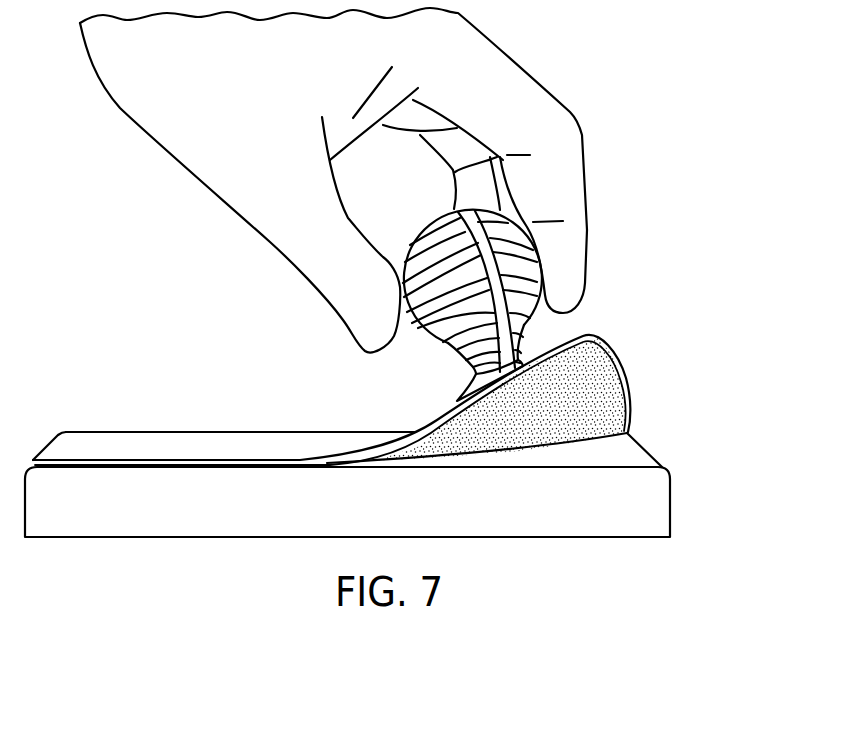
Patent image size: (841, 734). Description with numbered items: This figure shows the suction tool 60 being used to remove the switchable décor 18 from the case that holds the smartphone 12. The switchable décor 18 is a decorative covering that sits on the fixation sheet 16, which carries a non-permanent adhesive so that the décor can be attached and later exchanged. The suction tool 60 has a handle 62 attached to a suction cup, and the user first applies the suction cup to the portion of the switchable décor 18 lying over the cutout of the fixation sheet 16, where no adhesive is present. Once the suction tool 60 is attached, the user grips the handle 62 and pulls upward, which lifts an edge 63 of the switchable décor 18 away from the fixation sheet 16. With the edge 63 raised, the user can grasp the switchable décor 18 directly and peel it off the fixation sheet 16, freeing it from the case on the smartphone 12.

The smartphone 12 is at (689, 524).
The fixation sheet 16 is at (623, 444).
The switchable décor 18 is at (615, 357).
The suction tool 60 is at (498, 305).
The handle 62 is at (528, 287).
The edge 63 is at (622, 393).